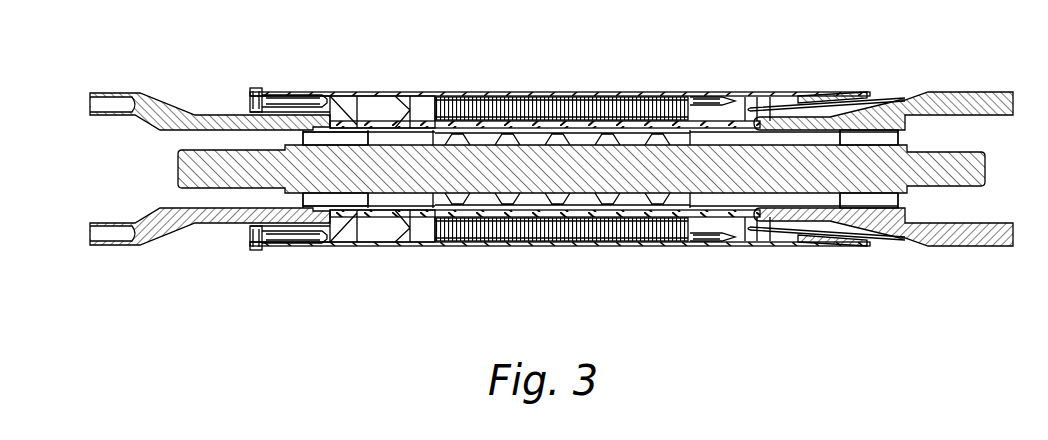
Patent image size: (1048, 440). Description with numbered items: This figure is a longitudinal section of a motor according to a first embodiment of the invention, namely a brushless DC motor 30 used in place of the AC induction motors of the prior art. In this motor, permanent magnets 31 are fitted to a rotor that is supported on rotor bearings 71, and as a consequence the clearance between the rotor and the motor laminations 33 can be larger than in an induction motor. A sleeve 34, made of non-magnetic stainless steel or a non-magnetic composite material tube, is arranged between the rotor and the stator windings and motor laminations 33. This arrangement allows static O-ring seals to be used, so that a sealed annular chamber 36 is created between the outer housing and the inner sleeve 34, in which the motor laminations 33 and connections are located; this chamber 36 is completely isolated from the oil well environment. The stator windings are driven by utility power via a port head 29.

The port head 29 is at (888, 97).
The brushless DC motor 30 is at (690, 247).
The permanent magnets 31 is at (590, 198).
The motor laminations 33 is at (532, 93).
The sleeve 34 is at (497, 223).
The sealed annular chamber 36 is at (375, 223).
The rotor bearings 71 is at (338, 202).